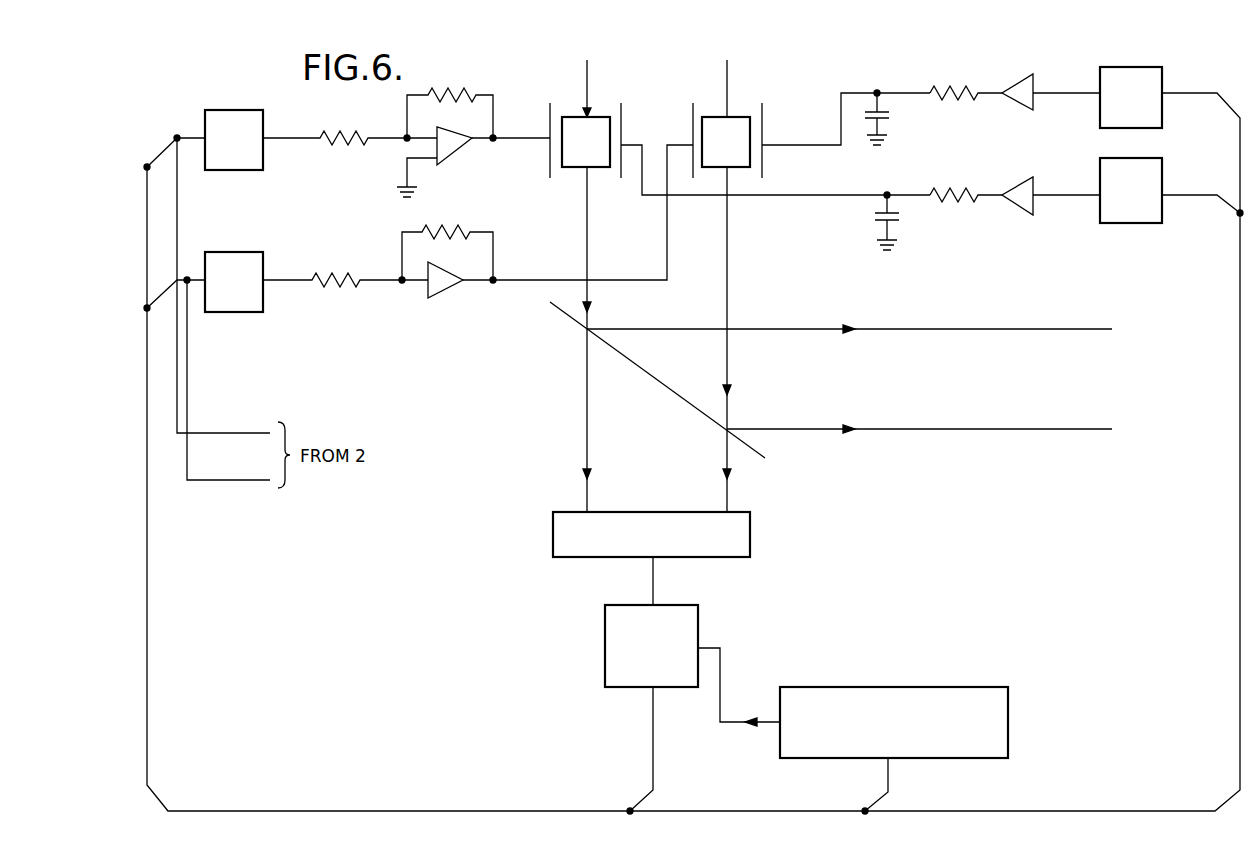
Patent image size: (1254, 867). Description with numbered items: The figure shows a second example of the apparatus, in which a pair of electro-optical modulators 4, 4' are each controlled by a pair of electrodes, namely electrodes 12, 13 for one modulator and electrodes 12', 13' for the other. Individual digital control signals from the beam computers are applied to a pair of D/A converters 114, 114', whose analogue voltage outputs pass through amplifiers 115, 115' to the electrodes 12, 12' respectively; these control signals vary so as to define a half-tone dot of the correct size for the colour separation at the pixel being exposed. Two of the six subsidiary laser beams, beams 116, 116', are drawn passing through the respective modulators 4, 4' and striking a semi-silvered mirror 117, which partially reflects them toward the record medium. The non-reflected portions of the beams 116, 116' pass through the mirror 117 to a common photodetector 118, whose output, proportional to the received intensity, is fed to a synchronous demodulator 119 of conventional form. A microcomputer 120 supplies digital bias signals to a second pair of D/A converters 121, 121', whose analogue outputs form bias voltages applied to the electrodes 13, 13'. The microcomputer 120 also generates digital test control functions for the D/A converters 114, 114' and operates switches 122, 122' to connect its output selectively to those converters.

The electro-optical modulator 4 is at (589, 123).
The electro-optical modulator 4' is at (748, 118).
The electrode 12 is at (533, 128).
The electrode 12' is at (697, 170).
The electrode 13 is at (645, 136).
The electrode 13' is at (783, 140).
The D/A converter 114 is at (250, 125).
The D/A converter 114' is at (252, 311).
The amplifier 115 is at (470, 153).
The amplifier 115' is at (464, 291).
The laser beam 116 is at (611, 280).
The laser beam 116' is at (751, 281).
The semi-silvered mirror 117 is at (652, 374).
The photodetector 118 is at (752, 534).
The synchronous demodulator 119 is at (700, 632).
The microcomputer 120 is at (900, 687).
The D/A converter 121 is at (1143, 209).
The D/A converter 121' is at (1161, 91).
The switch 122 is at (206, 266).
The switch 122' is at (207, 378).